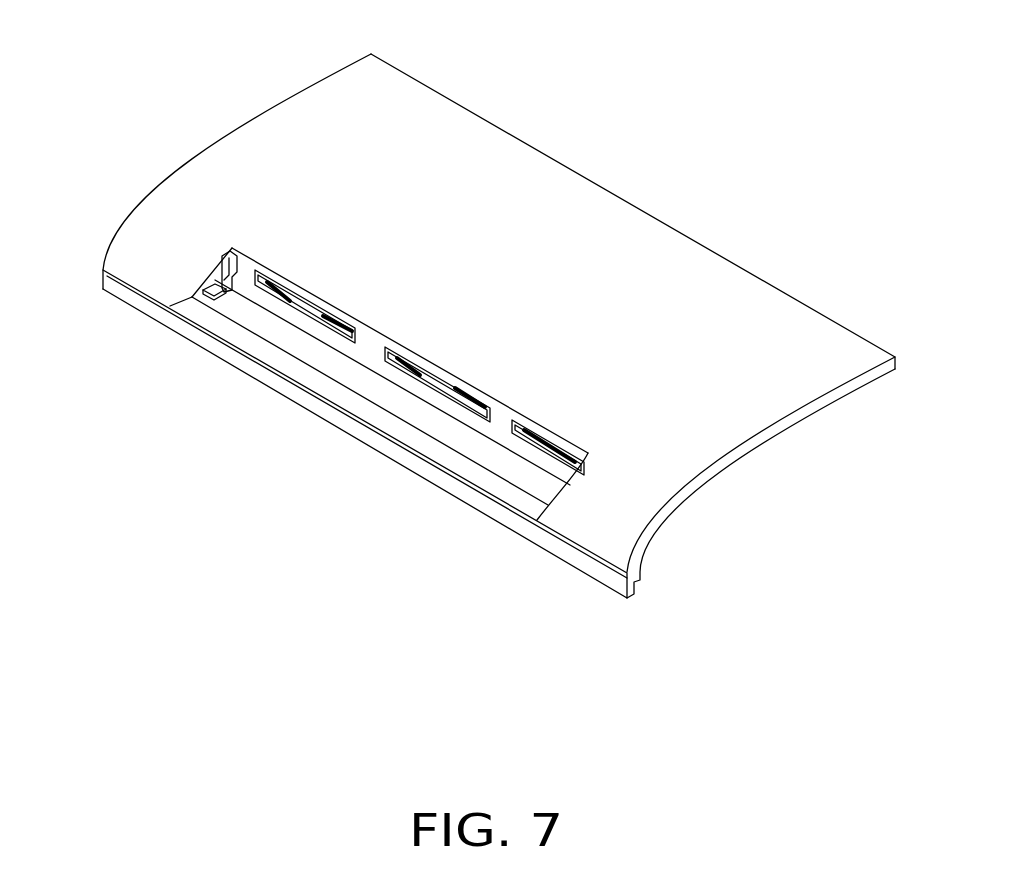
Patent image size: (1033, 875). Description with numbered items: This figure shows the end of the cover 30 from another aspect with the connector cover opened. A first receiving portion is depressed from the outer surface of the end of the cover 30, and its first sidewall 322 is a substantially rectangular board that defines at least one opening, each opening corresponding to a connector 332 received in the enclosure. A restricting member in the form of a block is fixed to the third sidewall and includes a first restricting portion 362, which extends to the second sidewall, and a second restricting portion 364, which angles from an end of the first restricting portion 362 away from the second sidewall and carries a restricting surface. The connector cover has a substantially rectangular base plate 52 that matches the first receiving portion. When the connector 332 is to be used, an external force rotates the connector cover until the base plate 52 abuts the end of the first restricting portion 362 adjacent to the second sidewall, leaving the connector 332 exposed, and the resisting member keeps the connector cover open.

The cover 30 is at (652, 278).
The first sidewall 322 is at (370, 345).
The connector 332 is at (297, 297).
The second restricting portion 364 is at (228, 262).
The first restricting portion 362 is at (224, 290).
The base plate 52 is at (428, 425).